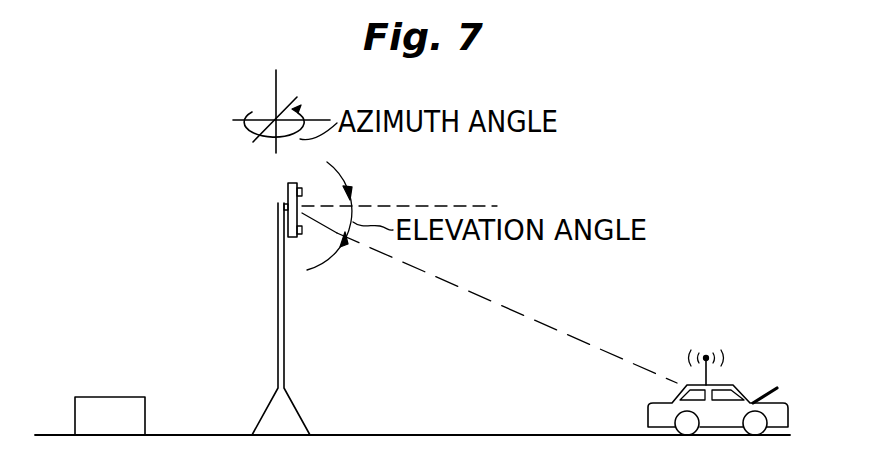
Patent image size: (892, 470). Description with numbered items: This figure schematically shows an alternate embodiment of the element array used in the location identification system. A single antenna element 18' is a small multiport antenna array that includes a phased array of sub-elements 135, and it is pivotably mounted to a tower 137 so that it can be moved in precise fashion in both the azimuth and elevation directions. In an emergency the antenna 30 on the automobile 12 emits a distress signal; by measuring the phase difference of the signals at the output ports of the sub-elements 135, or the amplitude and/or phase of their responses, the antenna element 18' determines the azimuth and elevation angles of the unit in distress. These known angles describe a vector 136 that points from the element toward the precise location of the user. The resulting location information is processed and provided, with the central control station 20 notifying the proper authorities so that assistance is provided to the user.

The antenna element 18' is at (239, 204).
The sub-elements 135 is at (300, 238).
The tower 137 is at (278, 292).
The central control station 20 is at (125, 410).
The vector 136 is at (533, 317).
The antenna 30 is at (706, 345).
The automobile 12 is at (752, 393).